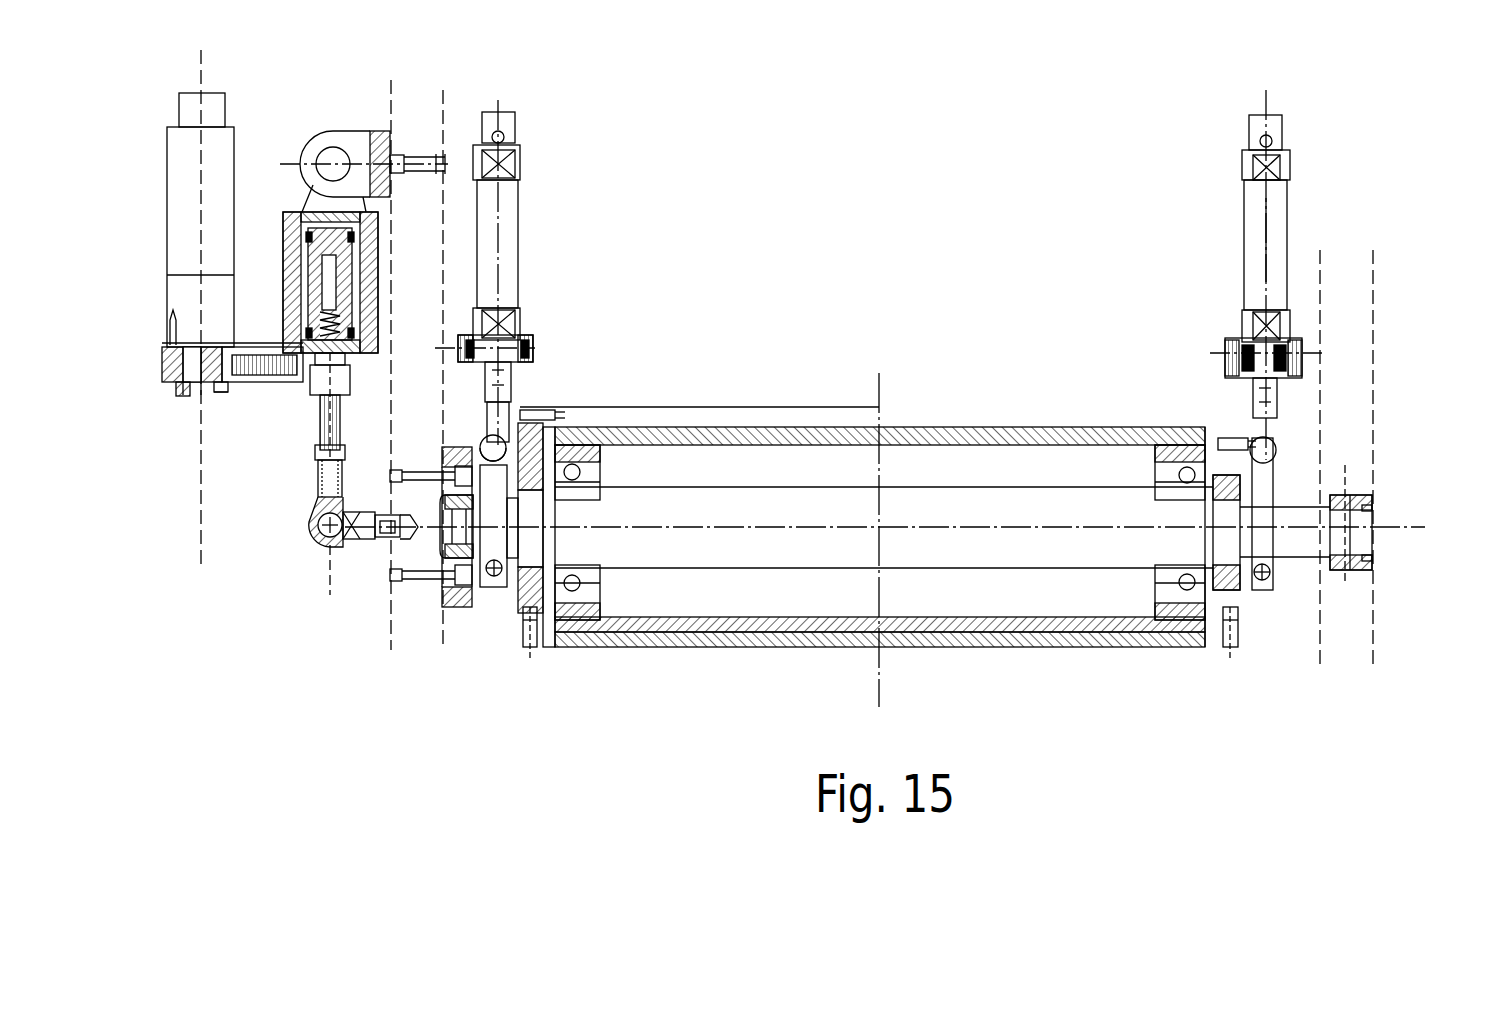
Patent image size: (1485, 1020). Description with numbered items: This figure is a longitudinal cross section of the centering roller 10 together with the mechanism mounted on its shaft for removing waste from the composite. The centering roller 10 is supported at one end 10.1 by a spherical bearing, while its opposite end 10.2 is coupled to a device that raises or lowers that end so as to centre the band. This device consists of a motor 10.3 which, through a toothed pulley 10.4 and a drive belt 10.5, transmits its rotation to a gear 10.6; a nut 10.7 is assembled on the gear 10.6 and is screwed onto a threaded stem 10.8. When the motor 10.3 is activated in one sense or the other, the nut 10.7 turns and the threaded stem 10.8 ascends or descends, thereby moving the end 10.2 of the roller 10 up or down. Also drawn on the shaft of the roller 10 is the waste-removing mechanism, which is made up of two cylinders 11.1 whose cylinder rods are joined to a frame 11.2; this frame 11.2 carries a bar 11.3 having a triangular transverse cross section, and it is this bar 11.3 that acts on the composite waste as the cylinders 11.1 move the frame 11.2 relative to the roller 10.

The centering roller 10 is at (1029, 415).
The end of the centering roller 10.1 is at (1363, 522).
The end of the centering roller 10.2 is at (373, 537).
The motor 10.3 is at (218, 153).
The toothed pulley 10.4 is at (162, 370).
The drive belt 10.5 is at (262, 368).
The gear 10.6 is at (355, 382).
The nut 10.7 is at (317, 382).
The threaded stem 10.8 is at (342, 425).
The cylinders 11.1 is at (498, 233).
The frame 11.2 is at (538, 407).
The bar 11.3 is at (710, 635).